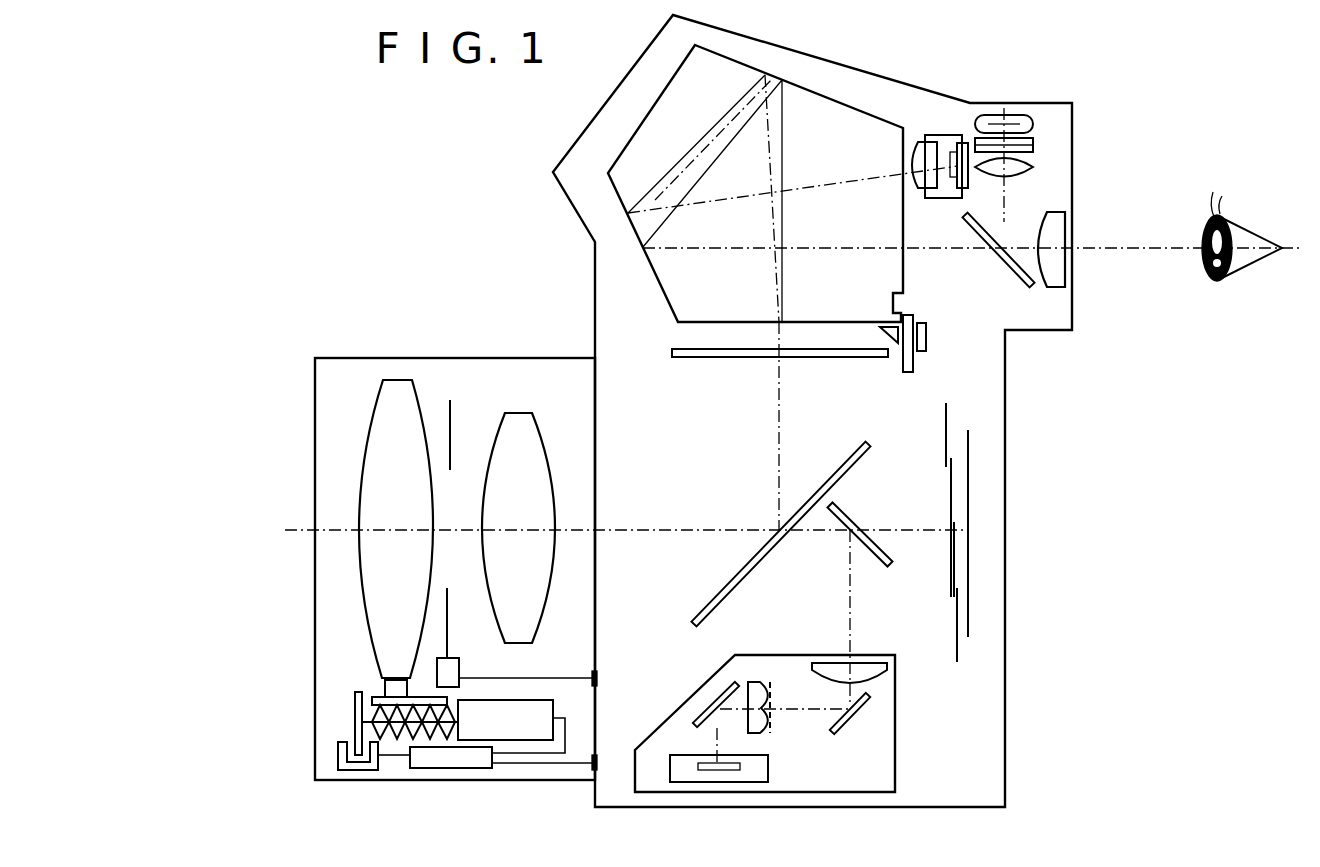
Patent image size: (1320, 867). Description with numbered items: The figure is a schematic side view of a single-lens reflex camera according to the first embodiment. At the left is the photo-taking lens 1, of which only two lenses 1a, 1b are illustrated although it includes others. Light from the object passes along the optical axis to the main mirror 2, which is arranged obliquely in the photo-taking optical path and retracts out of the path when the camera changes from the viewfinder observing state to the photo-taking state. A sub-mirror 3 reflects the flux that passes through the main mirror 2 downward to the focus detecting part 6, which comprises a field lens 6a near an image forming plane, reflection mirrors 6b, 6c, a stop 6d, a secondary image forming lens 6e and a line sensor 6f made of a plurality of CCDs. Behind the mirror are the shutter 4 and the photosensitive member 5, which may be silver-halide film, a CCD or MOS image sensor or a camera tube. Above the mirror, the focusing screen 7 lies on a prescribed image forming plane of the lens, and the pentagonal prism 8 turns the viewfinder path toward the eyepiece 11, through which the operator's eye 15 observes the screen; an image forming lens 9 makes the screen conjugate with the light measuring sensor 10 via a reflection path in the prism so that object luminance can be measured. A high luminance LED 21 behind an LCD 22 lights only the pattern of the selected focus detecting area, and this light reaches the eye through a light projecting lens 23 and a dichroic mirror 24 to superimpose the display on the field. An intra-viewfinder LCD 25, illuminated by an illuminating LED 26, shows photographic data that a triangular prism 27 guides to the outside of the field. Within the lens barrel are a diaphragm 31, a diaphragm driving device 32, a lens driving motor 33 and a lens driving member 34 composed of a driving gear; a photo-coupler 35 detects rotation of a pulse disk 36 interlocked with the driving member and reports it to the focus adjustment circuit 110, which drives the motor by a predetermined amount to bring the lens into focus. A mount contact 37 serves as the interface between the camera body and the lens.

The photo-taking lens 1 is at (429, 547).
The lens 1a is at (398, 380).
The lens 1b is at (520, 413).
The main mirror 2 is at (871, 450).
The sub-mirror 3 is at (877, 560).
The shutter 4 is at (947, 407).
The photosensitive member 5 is at (968, 553).
The focus detecting part 6 is at (796, 695).
The field lens 6a is at (886, 670).
The reflection mirror 6b is at (867, 700).
The reflection mirror 6c is at (718, 692).
The stop 6d is at (773, 682).
The secondary image forming lens 6e is at (755, 682).
The line sensor 6f is at (768, 765).
The focusing screen 7 is at (684, 357).
The pentagonal prism 8 is at (645, 108).
The image forming lens 9 is at (919, 142).
The light measuring sensor 10 is at (962, 143).
The eyepiece 11 is at (1060, 232).
The eye of photographer 15 is at (1258, 232).
The high luminance LED (SI-LED) 21 is at (1008, 115).
The LCD (SI-LCD) 22 is at (1035, 141).
The light projecting lens 23 is at (1035, 172).
The dichroic mirror 24 is at (1025, 287).
The intra-viewfinder LCD (F-LCD) 25 is at (913, 362).
The illuminating LED (F-LED) 26 is at (927, 327).
The triangular prism 27 is at (896, 345).
The diaphragm 31 is at (450, 620).
The diaphragm driving device 32 is at (460, 663).
The lens driving motor 33 is at (527, 700).
The lens driving member 34 is at (378, 698).
The photo-coupler 35 is at (363, 770).
The pulse disk 36 is at (355, 706).
The mount contact 37 is at (598, 762).
The focus adjustment circuit 110 is at (463, 768).